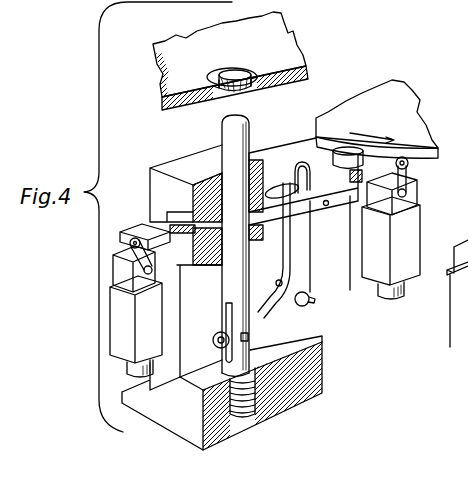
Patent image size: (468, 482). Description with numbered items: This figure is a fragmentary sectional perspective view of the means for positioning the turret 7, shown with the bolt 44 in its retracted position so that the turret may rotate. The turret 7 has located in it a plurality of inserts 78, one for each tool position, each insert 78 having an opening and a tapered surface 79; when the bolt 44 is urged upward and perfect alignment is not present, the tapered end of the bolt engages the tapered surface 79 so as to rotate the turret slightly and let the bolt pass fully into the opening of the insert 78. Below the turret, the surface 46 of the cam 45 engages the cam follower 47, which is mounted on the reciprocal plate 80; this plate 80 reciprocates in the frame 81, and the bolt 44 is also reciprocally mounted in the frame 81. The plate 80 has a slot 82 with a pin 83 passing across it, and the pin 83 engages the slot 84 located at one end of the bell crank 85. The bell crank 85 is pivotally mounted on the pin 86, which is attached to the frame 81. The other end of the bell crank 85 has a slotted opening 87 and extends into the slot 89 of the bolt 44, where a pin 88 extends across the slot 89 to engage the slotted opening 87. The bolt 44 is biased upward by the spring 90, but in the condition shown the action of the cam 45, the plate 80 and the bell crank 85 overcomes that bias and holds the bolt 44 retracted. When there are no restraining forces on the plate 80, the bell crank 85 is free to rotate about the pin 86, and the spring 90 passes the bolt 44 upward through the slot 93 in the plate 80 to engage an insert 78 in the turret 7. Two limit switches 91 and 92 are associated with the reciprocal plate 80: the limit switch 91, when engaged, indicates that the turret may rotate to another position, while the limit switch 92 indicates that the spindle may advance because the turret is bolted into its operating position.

The turret 7 is at (289, 60).
The insert 78 is at (228, 71).
The tapered surface 79 is at (239, 72).
The bolt 44 is at (229, 139).
The cam 45 is at (401, 106).
The surface 46 is at (425, 153).
The cam follower 47 is at (346, 149).
The reciprocal plate 80 is at (340, 191).
The frame 81 is at (173, 167).
The slot 82 is at (269, 188).
The pin 83 is at (327, 206).
The slot 84 is at (300, 160).
The bell crank 85 is at (306, 264).
The pin 86 is at (309, 298).
The slotted opening 87 is at (215, 338).
The pin 88 is at (249, 336).
The slot 89 is at (226, 312).
The spring 90 is at (257, 358).
The limit switch 91 is at (136, 311).
The limit switch 92 is at (391, 228).
The slot 93 is at (194, 270).